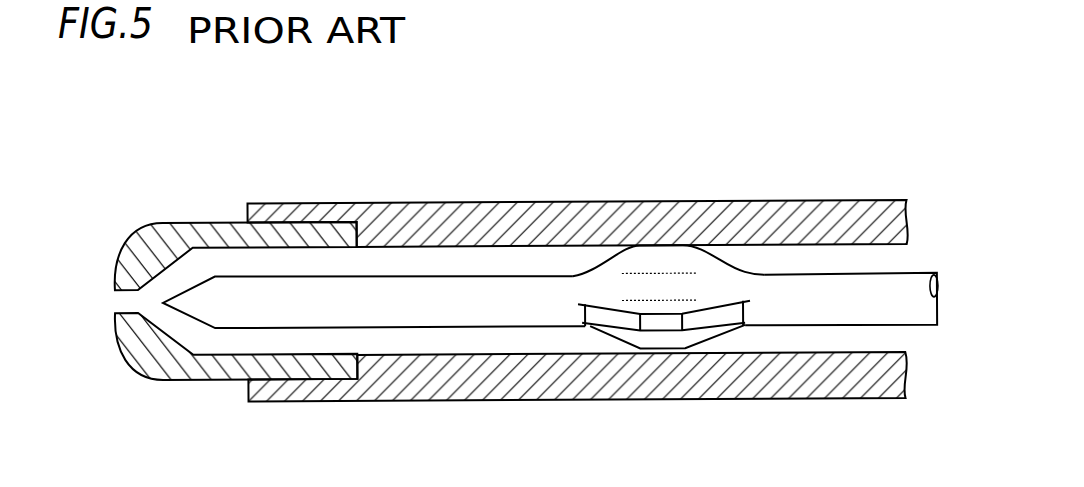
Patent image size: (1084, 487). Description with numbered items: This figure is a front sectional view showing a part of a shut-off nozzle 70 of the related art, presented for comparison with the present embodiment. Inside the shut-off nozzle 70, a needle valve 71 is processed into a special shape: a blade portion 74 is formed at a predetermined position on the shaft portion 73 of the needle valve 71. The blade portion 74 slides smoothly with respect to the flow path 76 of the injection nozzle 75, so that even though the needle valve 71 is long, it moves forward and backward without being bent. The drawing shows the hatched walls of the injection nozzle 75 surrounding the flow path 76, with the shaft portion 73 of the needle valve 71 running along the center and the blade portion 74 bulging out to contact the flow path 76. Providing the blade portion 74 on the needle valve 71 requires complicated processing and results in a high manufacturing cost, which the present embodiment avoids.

The shut-off nozzle 70 is at (865, 156).
The needle valve 71 is at (458, 276).
The shaft portion 73 is at (769, 275).
The blade portion 74 is at (694, 254).
The injection nozzle 75 is at (331, 200).
The flow path 76 is at (828, 354).